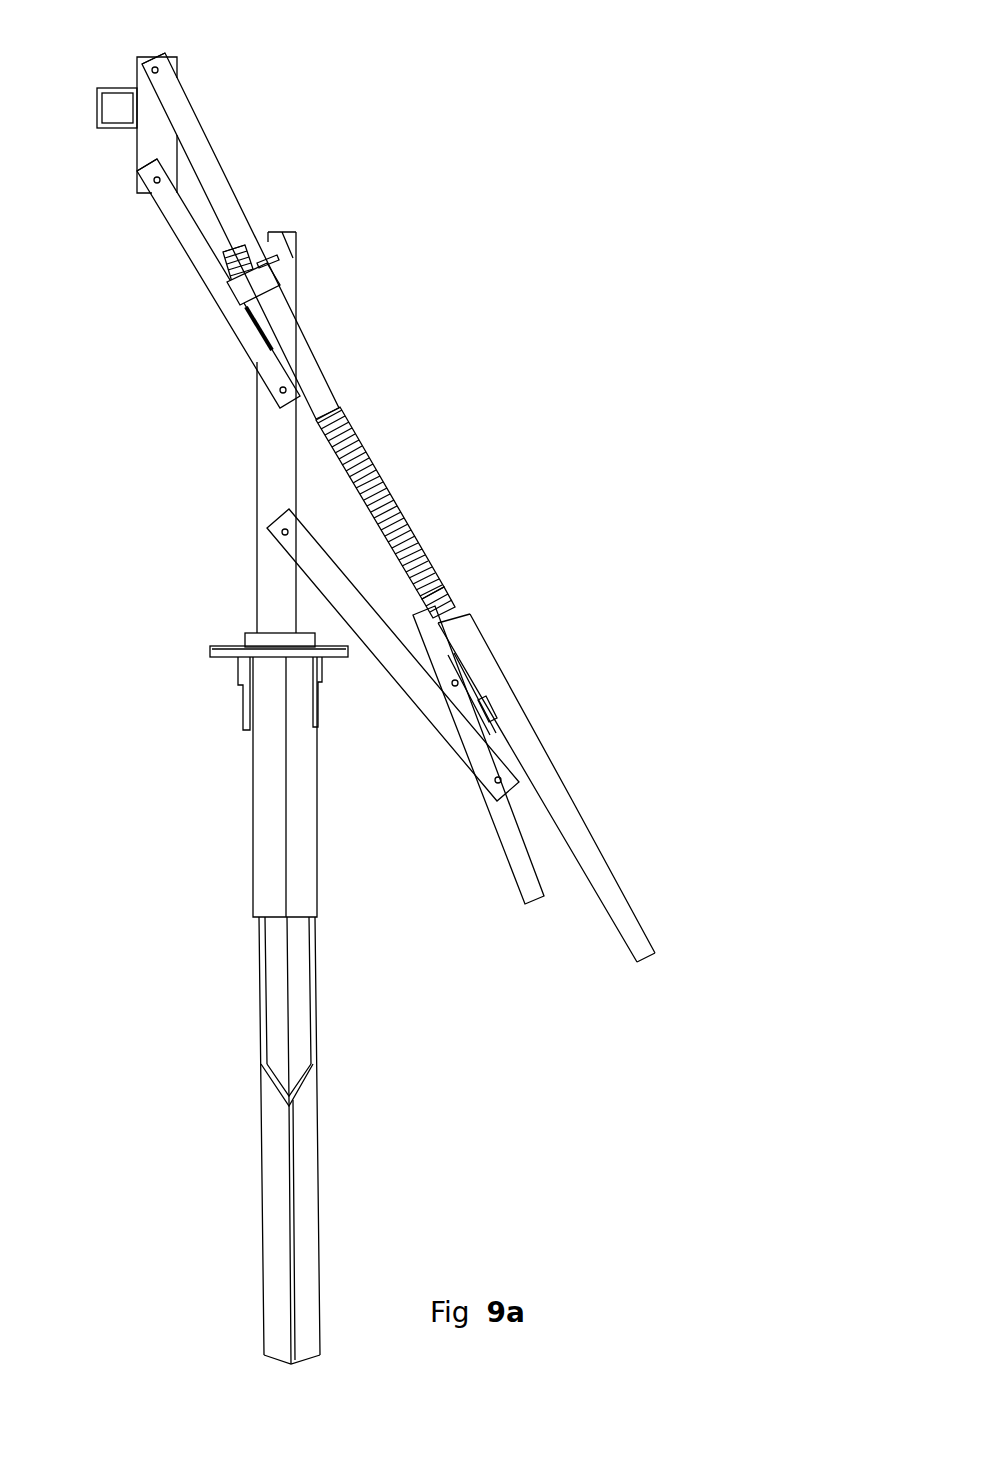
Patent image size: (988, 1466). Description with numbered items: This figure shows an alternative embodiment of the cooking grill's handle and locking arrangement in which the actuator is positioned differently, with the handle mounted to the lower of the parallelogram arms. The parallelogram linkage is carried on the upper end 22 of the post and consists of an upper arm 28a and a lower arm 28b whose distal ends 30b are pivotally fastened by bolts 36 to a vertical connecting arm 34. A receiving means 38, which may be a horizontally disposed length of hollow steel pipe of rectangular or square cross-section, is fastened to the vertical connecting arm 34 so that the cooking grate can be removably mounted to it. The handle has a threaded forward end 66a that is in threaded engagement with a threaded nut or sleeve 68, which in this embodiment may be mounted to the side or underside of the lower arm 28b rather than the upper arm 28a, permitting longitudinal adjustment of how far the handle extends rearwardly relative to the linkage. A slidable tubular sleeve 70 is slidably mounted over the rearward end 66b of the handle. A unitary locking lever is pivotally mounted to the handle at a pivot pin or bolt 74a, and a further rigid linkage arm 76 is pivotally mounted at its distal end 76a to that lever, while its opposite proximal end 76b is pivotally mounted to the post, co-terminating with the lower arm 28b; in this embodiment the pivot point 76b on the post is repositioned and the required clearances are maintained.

The upper end of post 22 is at (308, 485).
The upper arm 28a is at (186, 113).
The lower arm 28b is at (229, 308).
The distal ends 30b is at (182, 97).
The vertical connecting arm 34 is at (147, 158).
The bolts 36 is at (157, 66).
The receiving means 38 is at (98, 119).
The threaded forward end 66a is at (347, 433).
The rearward end of handle 66b is at (638, 921).
The threaded nut or sleeve 68 is at (268, 278).
The slidable tubular sleeve 70 is at (507, 707).
The pivot pin or bolt 74a is at (456, 682).
The rigid linkage arm 76 is at (416, 706).
The distal end of linkage arm 76a is at (453, 737).
The proximal end of linkage arm 76b is at (298, 552).